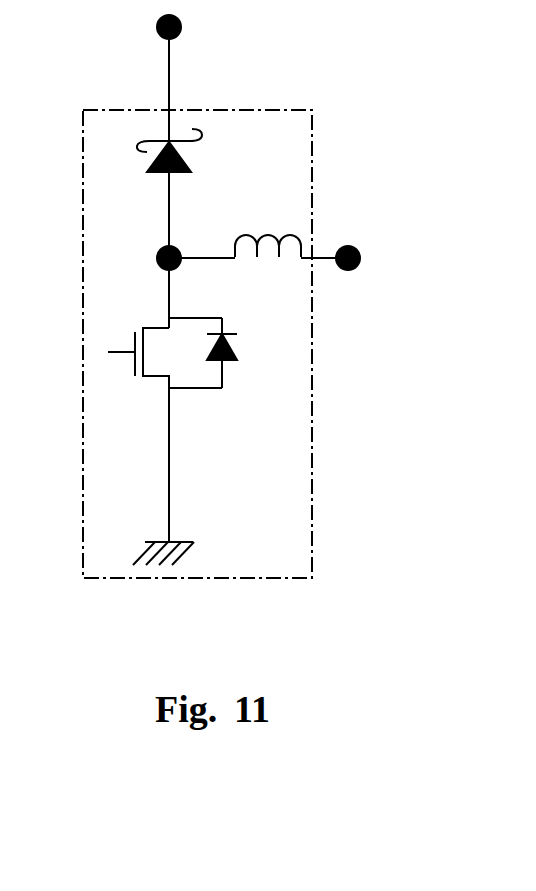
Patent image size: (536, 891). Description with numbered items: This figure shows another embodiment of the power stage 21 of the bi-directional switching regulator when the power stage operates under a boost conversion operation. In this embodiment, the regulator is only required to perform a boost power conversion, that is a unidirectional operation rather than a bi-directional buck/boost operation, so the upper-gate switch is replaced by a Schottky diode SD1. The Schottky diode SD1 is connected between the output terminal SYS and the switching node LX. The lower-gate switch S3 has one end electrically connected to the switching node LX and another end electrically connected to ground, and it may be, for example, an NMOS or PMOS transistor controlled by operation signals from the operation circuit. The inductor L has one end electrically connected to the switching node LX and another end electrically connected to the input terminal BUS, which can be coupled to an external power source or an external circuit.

The power stage 21 is at (285, 551).
The output terminal SYS is at (201, 27).
The Schottky diode SD1 is at (190, 154).
The switching node LX is at (184, 245).
The inductor L is at (268, 232).
The input terminal BUS is at (380, 257).
The lower-gate switch S3 is at (172, 353).